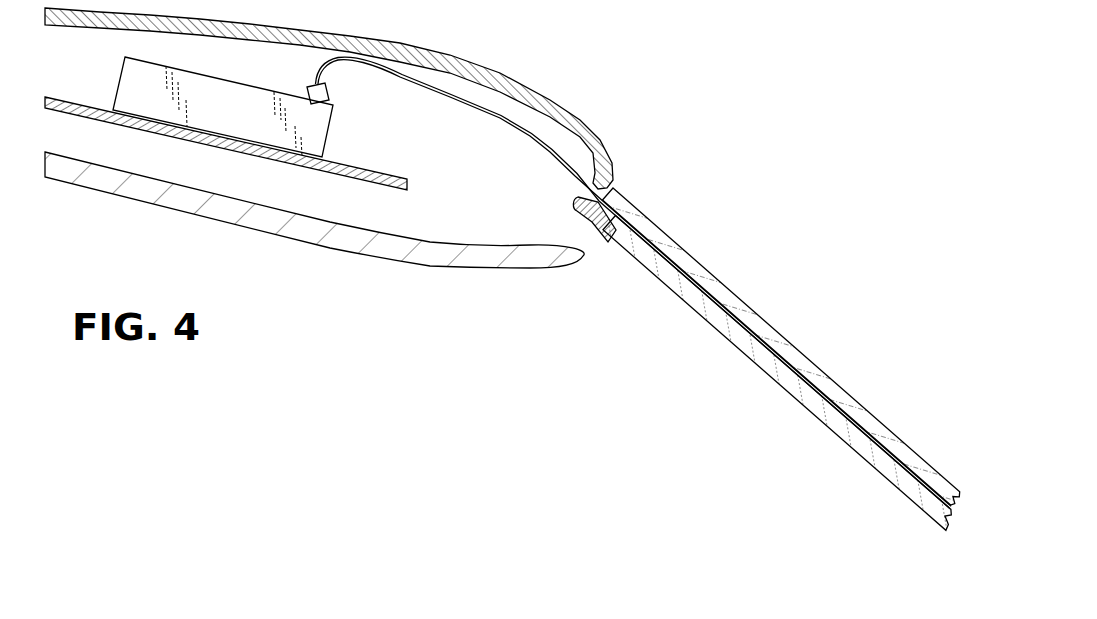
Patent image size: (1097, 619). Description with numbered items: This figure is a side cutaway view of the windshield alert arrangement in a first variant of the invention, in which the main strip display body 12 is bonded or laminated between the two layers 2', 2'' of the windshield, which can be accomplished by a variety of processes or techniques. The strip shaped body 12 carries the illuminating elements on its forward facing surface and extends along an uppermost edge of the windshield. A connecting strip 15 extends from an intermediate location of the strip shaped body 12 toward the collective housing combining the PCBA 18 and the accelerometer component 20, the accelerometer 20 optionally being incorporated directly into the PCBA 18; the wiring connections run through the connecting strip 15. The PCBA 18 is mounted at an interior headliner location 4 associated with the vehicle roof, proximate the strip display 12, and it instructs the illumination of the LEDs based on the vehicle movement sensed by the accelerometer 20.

The windshield layer 2' is at (781, 346).
The windshield layer 2'' is at (777, 373).
The interior headliner location 4 is at (187, 213).
The main strip display body 12 is at (663, 264).
The connecting strip 15 is at (540, 152).
The PCBA 18 is at (367, 165).
The accelerometer component 20 is at (113, 92).